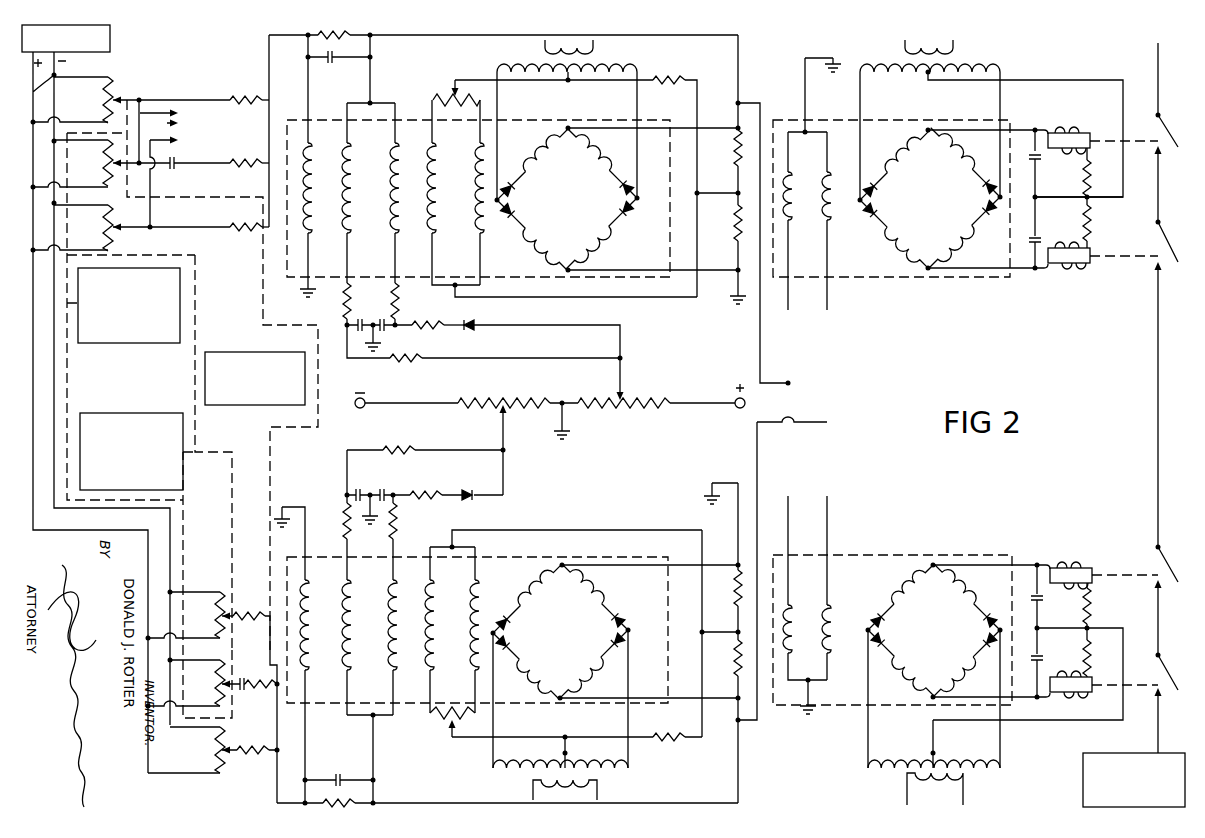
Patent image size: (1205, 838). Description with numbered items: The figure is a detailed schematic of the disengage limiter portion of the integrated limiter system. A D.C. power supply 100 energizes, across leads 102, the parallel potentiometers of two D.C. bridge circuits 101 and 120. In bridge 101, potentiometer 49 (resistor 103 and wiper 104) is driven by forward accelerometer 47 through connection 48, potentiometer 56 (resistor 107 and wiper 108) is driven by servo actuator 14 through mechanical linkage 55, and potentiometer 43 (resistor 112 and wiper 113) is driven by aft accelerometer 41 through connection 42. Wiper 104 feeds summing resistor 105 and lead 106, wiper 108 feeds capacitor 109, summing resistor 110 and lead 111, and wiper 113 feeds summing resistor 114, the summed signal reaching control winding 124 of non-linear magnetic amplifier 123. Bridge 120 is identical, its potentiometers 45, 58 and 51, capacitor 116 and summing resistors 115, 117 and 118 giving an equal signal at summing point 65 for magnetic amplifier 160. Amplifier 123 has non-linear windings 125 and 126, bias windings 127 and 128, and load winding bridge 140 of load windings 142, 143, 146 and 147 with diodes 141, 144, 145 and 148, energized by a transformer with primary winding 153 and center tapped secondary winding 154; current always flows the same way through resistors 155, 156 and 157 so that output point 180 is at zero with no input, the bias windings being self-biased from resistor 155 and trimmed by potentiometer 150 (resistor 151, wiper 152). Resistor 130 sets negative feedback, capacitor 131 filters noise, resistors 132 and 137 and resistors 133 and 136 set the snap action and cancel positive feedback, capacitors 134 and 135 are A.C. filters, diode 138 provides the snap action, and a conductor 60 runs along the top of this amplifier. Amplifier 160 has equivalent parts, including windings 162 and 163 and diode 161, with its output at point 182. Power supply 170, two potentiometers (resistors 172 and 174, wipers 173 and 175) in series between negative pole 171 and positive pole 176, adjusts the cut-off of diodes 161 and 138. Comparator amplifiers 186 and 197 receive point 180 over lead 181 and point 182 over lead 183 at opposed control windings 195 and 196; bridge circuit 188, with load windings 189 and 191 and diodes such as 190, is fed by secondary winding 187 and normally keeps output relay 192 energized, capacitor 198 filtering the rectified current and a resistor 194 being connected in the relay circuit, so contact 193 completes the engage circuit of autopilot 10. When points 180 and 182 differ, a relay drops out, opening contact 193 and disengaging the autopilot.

The autopilot 10 is at (1083, 776).
The servo actuator 14 is at (244, 351).
The aft accelerometer 41 is at (168, 412).
The connection 42 is at (196, 280).
The potentiometer 43 is at (137, 216).
The potentiometer 45 is at (236, 611).
The forward accelerometer 47 is at (148, 343).
The connection 48 is at (65, 220).
The potentiometer 49 is at (124, 96).
The potentiometer 51 is at (234, 758).
The connection 55 is at (306, 391).
The potentiometer 56 is at (124, 154).
The potentiometer 58 is at (192, 673).
The conductor 60 is at (306, 40).
The summing point 65 is at (304, 782).
The D.C. power supply 100 is at (110, 40).
The D.C. bridge circuit 101 is at (205, 69).
The leads 102 is at (63, 72).
The resistor 103 is at (73, 100).
The wiper 104 is at (141, 97).
The summing resistor 105 is at (234, 98).
The lead 106 is at (143, 133).
The resistor 107 is at (83, 163).
The wiper 108 is at (70, 177).
The capacitor 109 is at (174, 168).
The summing resistor 110 is at (233, 168).
The lead 111 is at (193, 133).
The resistor 112 is at (83, 227).
The wiper 113 is at (70, 239).
The summing resistor 114 is at (240, 236).
The summing resistor 115 is at (267, 614).
The capacitor 116 is at (240, 682).
The summing resistor 117 is at (274, 692).
The summing resistor 118 is at (268, 747).
The D.C. bridge circuit 120 is at (214, 503).
The non-linear amplifier 123 is at (620, 155).
The control winding 124 is at (322, 166).
The non-linear winding 125 is at (368, 159).
The non-linear winding 126 is at (410, 193).
The bias winding 127 is at (562, 198).
The bias winding 128 is at (466, 192).
The resistor 130 is at (339, 34).
The capacitor 131 is at (337, 57).
The resistor 132 is at (352, 294).
The resistor 133 is at (400, 302).
The capacitor 134 is at (370, 326).
The capacitor 135 is at (386, 332).
The resistor 136 is at (436, 322).
The resistor 137 is at (424, 356).
The diode 138 is at (472, 330).
The load winding bridge 140 is at (615, 199).
The diode 141 is at (504, 186).
The load winding 142 is at (549, 148).
The load winding 143 is at (599, 156).
The diode 144 is at (624, 192).
The diode 145 is at (618, 214).
The load winding 146 is at (590, 238).
The load winding 147 is at (544, 243).
The diode 148 is at (511, 208).
The potentiometer 150 is at (452, 96).
The resistor 151 is at (466, 102).
The wiper 152 is at (458, 80).
The primary winding 153 is at (565, 39).
The center tapped secondary winding 154 is at (610, 60).
The resistor 155 is at (678, 79).
The resistor 156 is at (728, 160).
The resistor 157 is at (734, 228).
The magnetic amplifier 160 is at (506, 655).
The diode 161 is at (466, 492).
The winding 162 is at (338, 634).
The winding 163 is at (396, 600).
The power supply 170 is at (550, 405).
The negative pole 171 is at (367, 400).
The resistor 172 is at (507, 398).
The wiper 173 is at (500, 427).
The resistor 174 is at (574, 400).
The wiper 175 is at (621, 390).
The positive pole 176 is at (736, 401).
The output point 180 is at (738, 102).
The lead 181 is at (762, 112).
The point 182 is at (740, 724).
The lead 183 is at (757, 470).
The comparator amplifier 186 is at (948, 174).
The center tapped secondary winding 187 is at (987, 64).
The bridge circuit 188 is at (945, 197).
The load winding 189 is at (960, 174).
The diode 190 is at (980, 214).
The load winding 191 is at (965, 252).
The output relay 192 is at (1093, 133).
The contact 193 is at (1163, 121).
The resistor 194 is at (1089, 186).
The control winding 195 is at (788, 217).
The control winding 196 is at (830, 218).
The comparator amplifier 197 is at (891, 556).
The capacitor 198 is at (1037, 158).